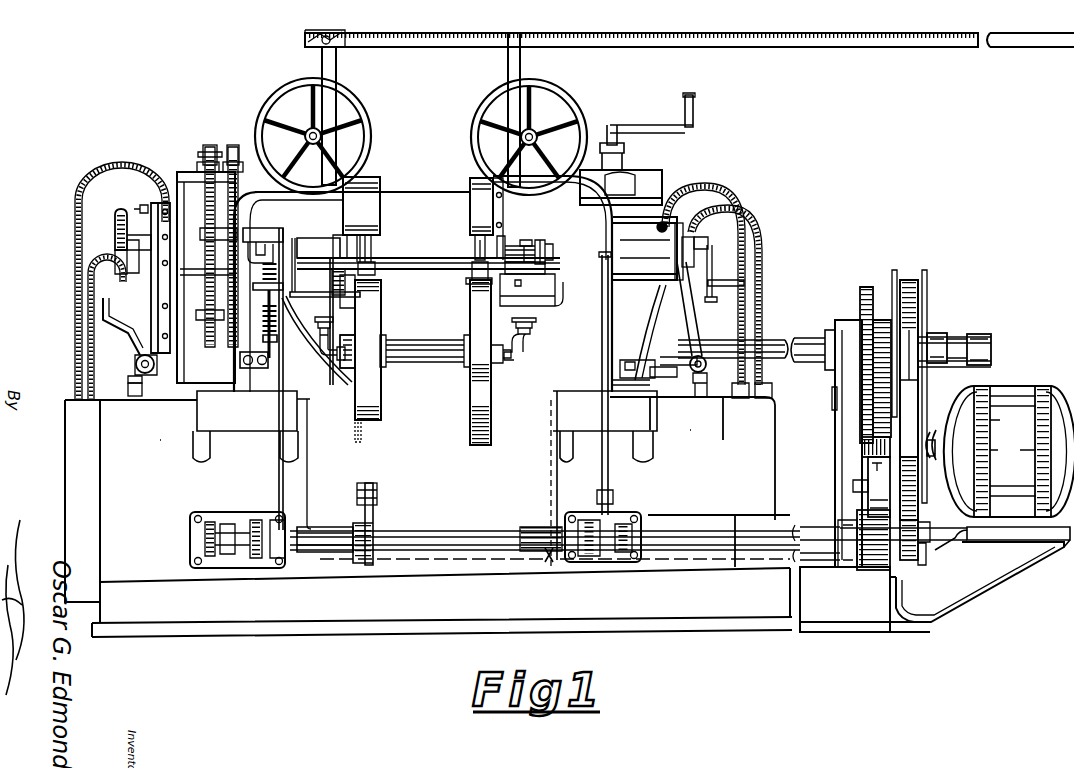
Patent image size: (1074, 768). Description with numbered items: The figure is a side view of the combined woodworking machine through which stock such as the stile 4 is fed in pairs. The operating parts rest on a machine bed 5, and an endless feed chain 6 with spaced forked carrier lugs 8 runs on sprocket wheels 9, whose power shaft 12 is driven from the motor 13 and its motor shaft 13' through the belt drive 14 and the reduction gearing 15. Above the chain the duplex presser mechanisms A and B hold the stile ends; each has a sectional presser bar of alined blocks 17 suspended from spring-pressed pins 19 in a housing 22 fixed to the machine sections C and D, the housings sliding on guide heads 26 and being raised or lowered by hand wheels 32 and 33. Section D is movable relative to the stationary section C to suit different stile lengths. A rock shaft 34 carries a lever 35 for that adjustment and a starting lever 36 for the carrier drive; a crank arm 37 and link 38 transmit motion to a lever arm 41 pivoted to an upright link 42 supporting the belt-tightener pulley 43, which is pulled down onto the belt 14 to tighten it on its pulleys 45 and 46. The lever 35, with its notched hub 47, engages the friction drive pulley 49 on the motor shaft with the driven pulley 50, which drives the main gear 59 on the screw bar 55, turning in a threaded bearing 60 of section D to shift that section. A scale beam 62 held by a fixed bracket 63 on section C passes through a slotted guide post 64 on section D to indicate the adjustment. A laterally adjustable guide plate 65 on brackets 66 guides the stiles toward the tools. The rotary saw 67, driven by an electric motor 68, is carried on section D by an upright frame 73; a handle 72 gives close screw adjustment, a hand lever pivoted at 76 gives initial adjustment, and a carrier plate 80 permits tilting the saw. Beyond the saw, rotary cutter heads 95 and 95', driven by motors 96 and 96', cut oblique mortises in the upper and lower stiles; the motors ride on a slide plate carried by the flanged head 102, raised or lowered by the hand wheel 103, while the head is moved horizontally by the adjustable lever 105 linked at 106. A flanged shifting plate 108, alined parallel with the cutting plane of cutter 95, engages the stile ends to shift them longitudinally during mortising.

The stile 4 is at (432, 272).
The machine bed 5 is at (731, 607).
The feed chain 6 is at (372, 266).
The carrier lug 8 is at (374, 254).
The sprocket wheel 9 is at (470, 262).
The power shaft 12 is at (438, 354).
The motor 13 is at (1009, 438).
The motor shaft 13' is at (1003, 439).
The belt drive 14 is at (909, 387).
The gearing 15 is at (880, 345).
The block 17 is at (372, 250).
The pin 19 is at (475, 242).
The housing 22 is at (471, 178).
The guide head 26 is at (423, 284).
The hand wheel 32 is at (277, 104).
The hand wheel 33 is at (561, 90).
The rock shaft 34 is at (470, 530).
The lever 35 is at (603, 333).
The lever 36 is at (280, 418).
The crank arm 37 is at (373, 518).
The link 38 is at (360, 494).
The lever arm 41 is at (948, 522).
The upright link 42 is at (948, 348).
The belt-tightener pulley 43 is at (917, 308).
The pulley 45 is at (938, 456).
The pulley 46 is at (926, 278).
The hub 47 is at (866, 545).
The friction drive pulley 49 is at (862, 446).
The driven pulley 50 is at (868, 481).
The screw bar 55 is at (533, 530).
The main gear 59 is at (921, 553).
The threaded bearing 60 is at (530, 505).
The scale beam 62 is at (825, 46).
The fixed bracket 63 is at (336, 80).
The slotted guide post 64 is at (508, 62).
The guide plate 65 is at (297, 310).
The bracket 66 is at (308, 342).
The rotary saw 67 is at (533, 265).
The electric motor 68 is at (668, 223).
The handle 72 is at (748, 240).
The upright frame 73 is at (665, 200).
The pivot 76 is at (690, 325).
The carrier plate 80 is at (660, 325).
The rotary cutter head 95 is at (301, 306).
The rotary cutter head 95' is at (381, 321).
The electric motor 96 is at (111, 278).
The motor 96' is at (111, 327).
The flanged head 102 is at (143, 208).
The hand wheel 103 is at (143, 334).
The adjustable lever 105 is at (137, 357).
The link 106 is at (132, 380).
The shifting plate 108 is at (533, 277).
The presser mechanism A is at (370, 218).
The presser mechanism B is at (477, 219).
The stationary section C is at (166, 459).
The adjustable section D is at (690, 446).